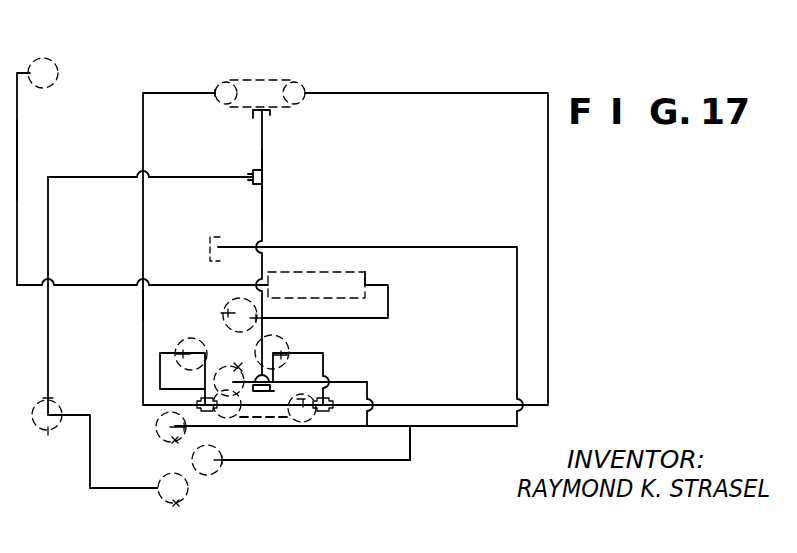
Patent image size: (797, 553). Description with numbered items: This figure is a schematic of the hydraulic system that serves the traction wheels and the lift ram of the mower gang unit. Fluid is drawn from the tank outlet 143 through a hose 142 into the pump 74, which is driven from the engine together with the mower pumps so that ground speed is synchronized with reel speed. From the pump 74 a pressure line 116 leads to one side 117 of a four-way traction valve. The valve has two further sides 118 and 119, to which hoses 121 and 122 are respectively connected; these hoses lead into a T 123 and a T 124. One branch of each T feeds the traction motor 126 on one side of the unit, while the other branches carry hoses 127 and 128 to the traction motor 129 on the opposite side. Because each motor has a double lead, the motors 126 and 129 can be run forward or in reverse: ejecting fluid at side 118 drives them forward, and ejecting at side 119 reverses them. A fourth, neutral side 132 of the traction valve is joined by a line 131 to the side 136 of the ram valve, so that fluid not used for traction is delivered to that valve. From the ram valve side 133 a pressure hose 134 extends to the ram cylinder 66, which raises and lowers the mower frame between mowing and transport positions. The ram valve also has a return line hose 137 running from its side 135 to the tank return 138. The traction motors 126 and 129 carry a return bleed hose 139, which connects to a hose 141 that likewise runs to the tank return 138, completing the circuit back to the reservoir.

The ram cylinder 66 is at (212, 243).
The pump 74 is at (367, 275).
The pressure line 116 is at (390, 313).
The traction valve side 117 is at (222, 315).
The traction valve side 118 is at (176, 346).
The traction valve side 119 is at (278, 345).
The hose 121 is at (160, 368).
The hose 122 is at (323, 358).
The T 123 is at (216, 412).
The T 124 is at (324, 416).
The traction motor 126 is at (291, 420).
The hose 127 is at (143, 303).
The hose 128 is at (443, 405).
The traction motor 129 is at (267, 78).
The line 131 is at (367, 393).
The neutral side of traction valve 132 is at (230, 366).
The ram valve side 133 is at (222, 476).
The pressure hose 134 is at (430, 430).
The ram valve side 135 is at (179, 505).
The ram valve side 136 is at (160, 440).
The return line hose 137 is at (120, 490).
The tank return 138 is at (50, 431).
The return bleed hose 139 is at (262, 160).
The hose 141 is at (160, 177).
The hose 142 is at (17, 148).
The tank outlet 143 is at (52, 86).